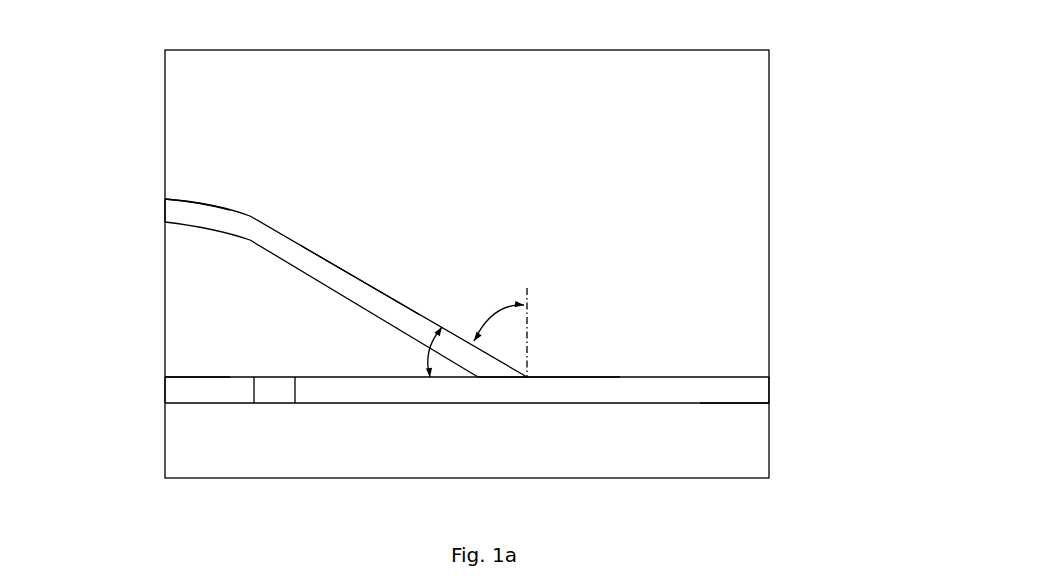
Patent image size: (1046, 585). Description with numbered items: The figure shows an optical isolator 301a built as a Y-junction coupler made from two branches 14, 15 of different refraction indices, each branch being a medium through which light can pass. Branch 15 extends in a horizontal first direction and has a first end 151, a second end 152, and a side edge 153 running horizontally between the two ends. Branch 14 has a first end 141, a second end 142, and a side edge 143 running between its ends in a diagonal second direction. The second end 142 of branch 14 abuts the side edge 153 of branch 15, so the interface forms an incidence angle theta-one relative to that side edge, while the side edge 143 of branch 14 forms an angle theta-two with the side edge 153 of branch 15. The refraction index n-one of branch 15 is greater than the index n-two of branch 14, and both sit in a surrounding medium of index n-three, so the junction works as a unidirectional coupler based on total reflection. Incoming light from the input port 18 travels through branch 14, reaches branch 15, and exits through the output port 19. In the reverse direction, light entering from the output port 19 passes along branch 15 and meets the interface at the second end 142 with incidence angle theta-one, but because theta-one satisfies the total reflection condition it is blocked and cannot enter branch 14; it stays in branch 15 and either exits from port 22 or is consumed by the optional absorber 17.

The optical isolator 301a is at (467, 246).
The branch 14 is at (275, 240).
The first end 141 is at (165, 205).
The second end 142 is at (498, 380).
The side edge 143 is at (380, 287).
The branch 15 is at (716, 392).
The first end 151 is at (165, 389).
The second end 152 is at (770, 396).
The side edge 153 is at (570, 377).
The absorber 17 is at (270, 400).
The input port 18 is at (106, 210).
The output port 19 is at (811, 391).
The port 22 is at (105, 390).